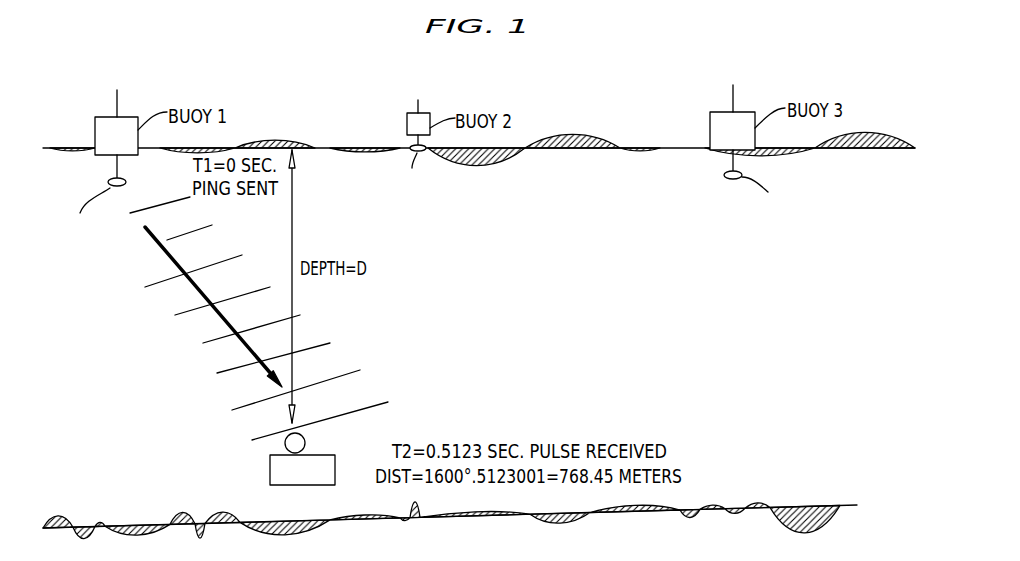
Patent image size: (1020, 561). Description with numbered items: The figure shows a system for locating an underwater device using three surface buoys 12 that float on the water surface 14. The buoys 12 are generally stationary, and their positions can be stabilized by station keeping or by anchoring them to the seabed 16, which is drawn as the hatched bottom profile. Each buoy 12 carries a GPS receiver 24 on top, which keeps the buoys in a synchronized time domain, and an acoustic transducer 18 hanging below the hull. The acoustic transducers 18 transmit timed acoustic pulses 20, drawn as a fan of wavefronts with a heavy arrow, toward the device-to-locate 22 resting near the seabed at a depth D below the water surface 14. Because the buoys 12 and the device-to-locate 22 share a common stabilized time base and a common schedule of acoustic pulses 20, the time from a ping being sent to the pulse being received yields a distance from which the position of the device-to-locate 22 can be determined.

The buoy 12 is at (95, 128).
The water surface 14 is at (860, 142).
The seabed 16 is at (800, 505).
The acoustic transducer 18 is at (113, 166).
The acoustic pulse 20 is at (185, 290).
The device-to-locate 22 is at (307, 442).
The GPS receiver 24 is at (118, 103).